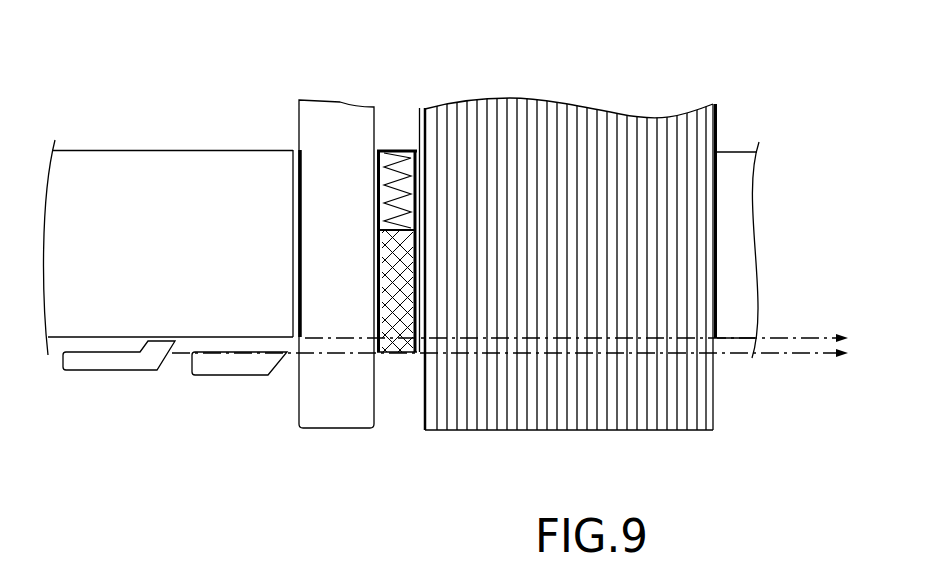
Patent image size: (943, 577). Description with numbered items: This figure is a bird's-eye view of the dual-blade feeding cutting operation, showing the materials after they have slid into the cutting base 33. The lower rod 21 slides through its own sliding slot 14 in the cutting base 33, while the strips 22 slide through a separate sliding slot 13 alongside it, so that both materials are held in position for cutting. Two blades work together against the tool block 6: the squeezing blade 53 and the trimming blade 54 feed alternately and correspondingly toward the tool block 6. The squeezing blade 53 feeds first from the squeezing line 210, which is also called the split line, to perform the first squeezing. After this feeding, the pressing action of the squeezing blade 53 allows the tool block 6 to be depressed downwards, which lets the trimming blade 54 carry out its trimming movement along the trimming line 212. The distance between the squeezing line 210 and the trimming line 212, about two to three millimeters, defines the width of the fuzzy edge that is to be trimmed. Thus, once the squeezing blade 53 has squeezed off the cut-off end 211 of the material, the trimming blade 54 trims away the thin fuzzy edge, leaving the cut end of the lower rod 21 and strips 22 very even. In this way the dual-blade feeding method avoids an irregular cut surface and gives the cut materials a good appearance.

The tool block 6 is at (402, 353).
The sliding slot 13 is at (726, 214).
The sliding slot 14 is at (290, 185).
The lower rod 21 is at (342, 132).
The strips 22 is at (537, 130).
The cutting base 33 is at (143, 150).
The squeezing blade 53 is at (217, 378).
The trimming blade 54 is at (125, 362).
The squeezing line 210 is at (350, 352).
The cut-off end 211 is at (352, 430).
The trimming line 212 is at (318, 338).